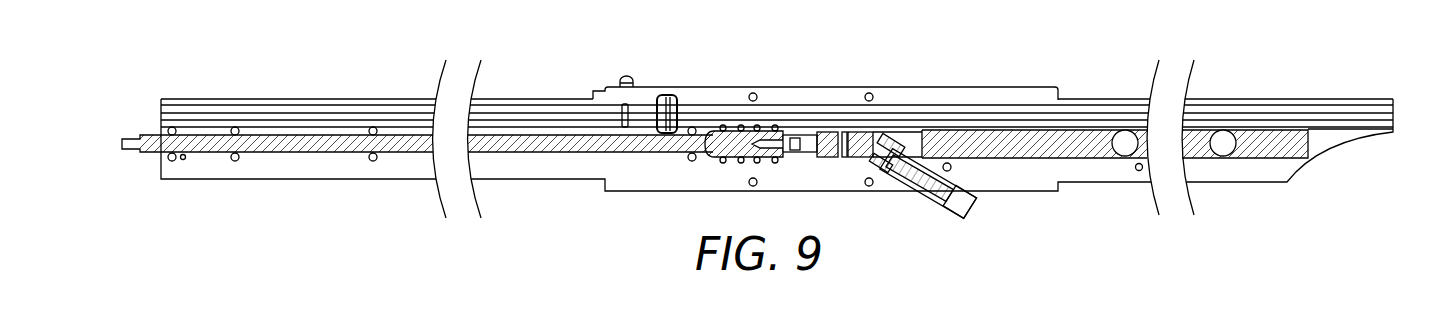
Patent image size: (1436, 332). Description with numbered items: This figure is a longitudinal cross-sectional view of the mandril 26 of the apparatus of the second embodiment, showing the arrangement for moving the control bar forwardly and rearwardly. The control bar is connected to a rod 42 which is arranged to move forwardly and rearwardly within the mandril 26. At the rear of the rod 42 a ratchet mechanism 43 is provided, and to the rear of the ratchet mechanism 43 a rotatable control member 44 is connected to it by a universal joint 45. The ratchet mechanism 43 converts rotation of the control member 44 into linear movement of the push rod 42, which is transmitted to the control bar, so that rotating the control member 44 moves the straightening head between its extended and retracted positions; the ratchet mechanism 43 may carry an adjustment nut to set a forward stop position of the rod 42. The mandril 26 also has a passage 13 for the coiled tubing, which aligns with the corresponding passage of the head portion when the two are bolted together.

The passage 13 is at (1100, 113).
The mandril 26 is at (552, 188).
The rod 42 is at (292, 148).
The ratchet mechanism 43 is at (774, 116).
The rotatable control member 44 is at (943, 188).
The universal joint 45 is at (862, 133).